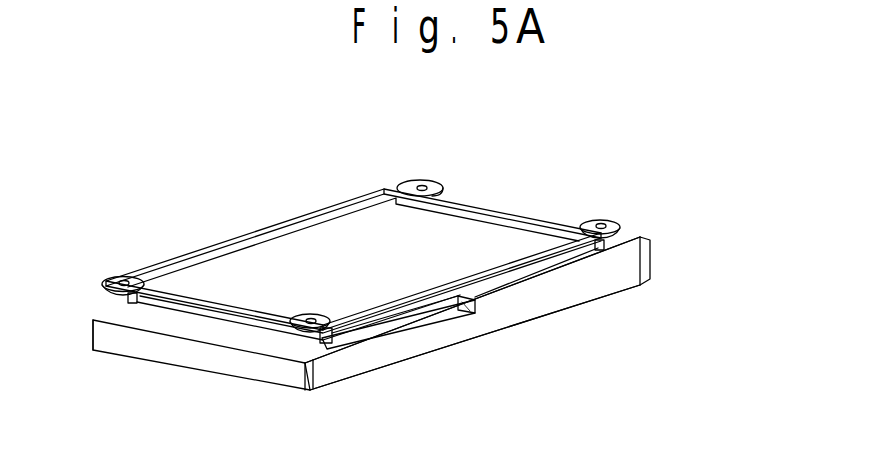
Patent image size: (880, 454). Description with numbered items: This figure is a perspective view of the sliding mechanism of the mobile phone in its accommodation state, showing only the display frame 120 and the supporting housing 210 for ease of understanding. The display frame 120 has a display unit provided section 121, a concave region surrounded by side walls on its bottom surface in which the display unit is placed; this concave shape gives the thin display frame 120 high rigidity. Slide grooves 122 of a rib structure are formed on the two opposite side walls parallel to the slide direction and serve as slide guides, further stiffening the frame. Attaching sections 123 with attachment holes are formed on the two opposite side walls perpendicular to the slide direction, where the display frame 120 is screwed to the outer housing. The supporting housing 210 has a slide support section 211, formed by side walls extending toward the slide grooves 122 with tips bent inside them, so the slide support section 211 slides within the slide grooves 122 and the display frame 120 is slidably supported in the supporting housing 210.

The display frame 120 is at (373, 224).
The display unit provided section 121 is at (277, 256).
The slide groove 122 is at (427, 318).
The attaching section 123 is at (604, 223).
The supporting housing 210 is at (220, 360).
The slide support section 211 is at (537, 276).